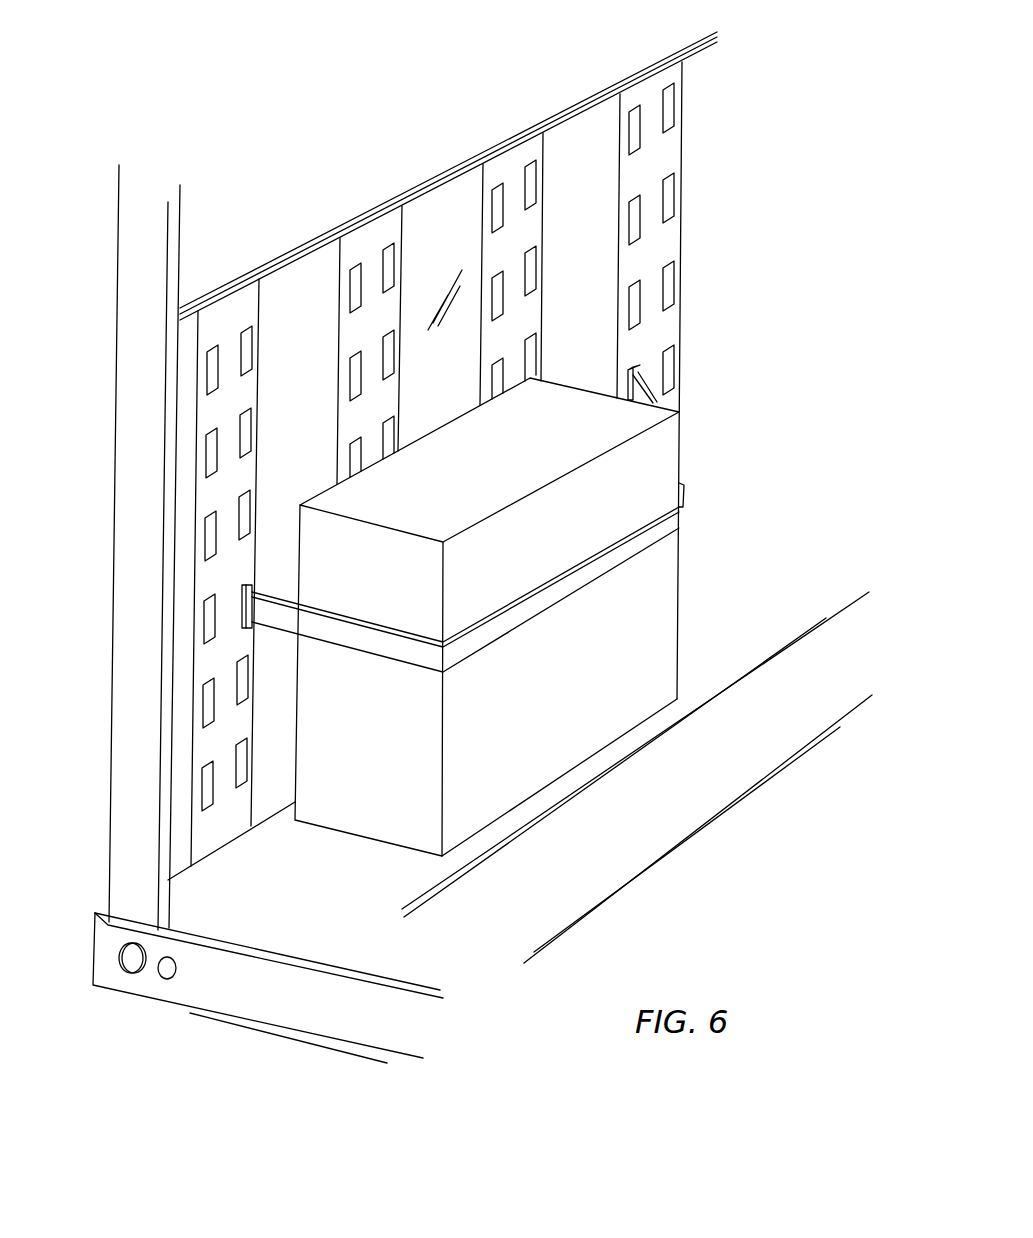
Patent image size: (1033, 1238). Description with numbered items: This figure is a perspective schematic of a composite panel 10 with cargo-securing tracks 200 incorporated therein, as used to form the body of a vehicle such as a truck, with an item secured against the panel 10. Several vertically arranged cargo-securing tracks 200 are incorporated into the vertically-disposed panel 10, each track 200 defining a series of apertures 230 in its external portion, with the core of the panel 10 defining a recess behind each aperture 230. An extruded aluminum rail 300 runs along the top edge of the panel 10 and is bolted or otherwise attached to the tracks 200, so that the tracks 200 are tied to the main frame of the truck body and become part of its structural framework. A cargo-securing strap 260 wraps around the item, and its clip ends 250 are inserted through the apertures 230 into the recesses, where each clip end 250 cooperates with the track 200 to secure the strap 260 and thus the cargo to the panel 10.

The composite panel 10 is at (595, 232).
The cargo-securing track 200 is at (238, 312).
The aperture 230 is at (492, 210).
The clip end 250 is at (650, 368).
The cargo-securing strap 260 is at (660, 527).
The rail 300 is at (572, 102).